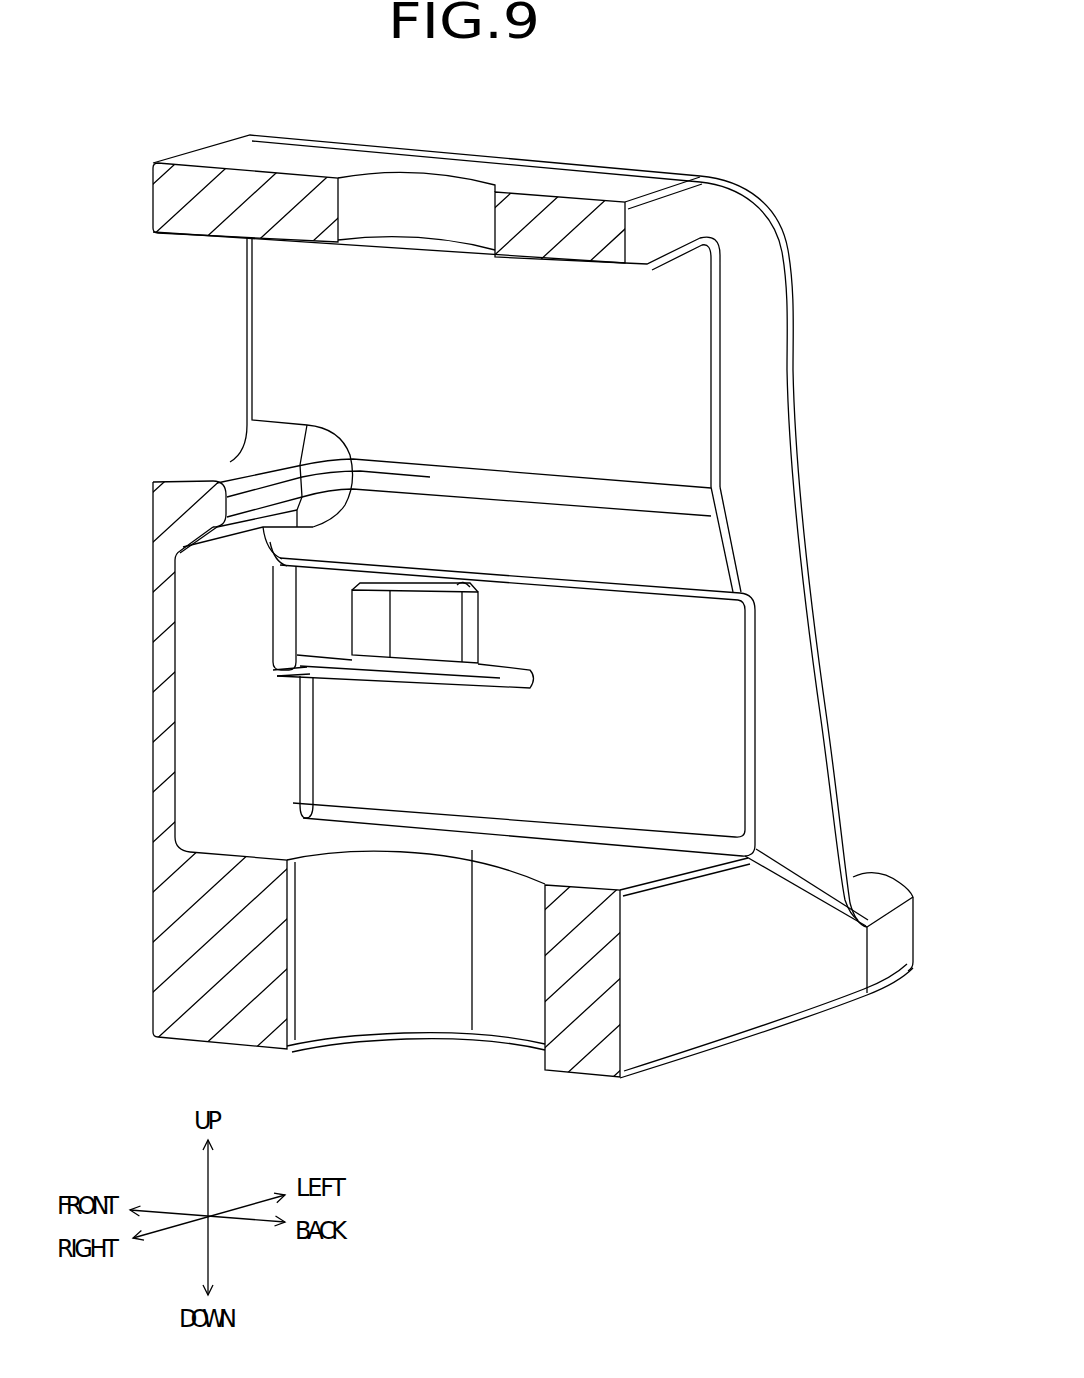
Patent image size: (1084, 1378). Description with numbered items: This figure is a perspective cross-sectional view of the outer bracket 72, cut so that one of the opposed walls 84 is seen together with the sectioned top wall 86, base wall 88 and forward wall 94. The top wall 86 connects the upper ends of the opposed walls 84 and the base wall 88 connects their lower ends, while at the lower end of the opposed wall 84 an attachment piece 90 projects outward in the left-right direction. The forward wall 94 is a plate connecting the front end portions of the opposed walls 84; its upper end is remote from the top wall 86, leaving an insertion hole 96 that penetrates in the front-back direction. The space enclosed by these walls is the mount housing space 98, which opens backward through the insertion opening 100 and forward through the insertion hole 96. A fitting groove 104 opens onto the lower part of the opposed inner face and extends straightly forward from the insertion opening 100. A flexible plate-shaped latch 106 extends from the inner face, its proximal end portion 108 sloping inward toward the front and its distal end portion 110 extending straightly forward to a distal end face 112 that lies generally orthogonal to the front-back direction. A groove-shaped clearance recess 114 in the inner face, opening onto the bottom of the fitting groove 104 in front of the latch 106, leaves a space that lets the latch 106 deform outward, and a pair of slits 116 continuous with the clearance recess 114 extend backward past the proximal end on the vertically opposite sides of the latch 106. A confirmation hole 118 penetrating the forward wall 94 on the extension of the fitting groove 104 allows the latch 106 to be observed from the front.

The outer bracket 72 is at (806, 150).
The opposed wall 84 is at (753, 393).
The top wall 86 is at (292, 162).
The base wall 88 is at (673, 1020).
The attachment piece 90 is at (870, 897).
The forward wall 94 is at (163, 743).
The insertion hole 96 is at (203, 470).
The mount housing space 98 is at (612, 770).
The insertion opening 100 is at (648, 265).
The fitting groove 104 is at (673, 595).
The latch 106 is at (345, 740).
The proximal end portion 108 is at (430, 640).
The distal end portion 110 is at (372, 637).
The distal end face 112 is at (352, 630).
The clearance recess 114 is at (317, 567).
The slit 116 is at (507, 593).
The confirmation hole 118 is at (278, 590).